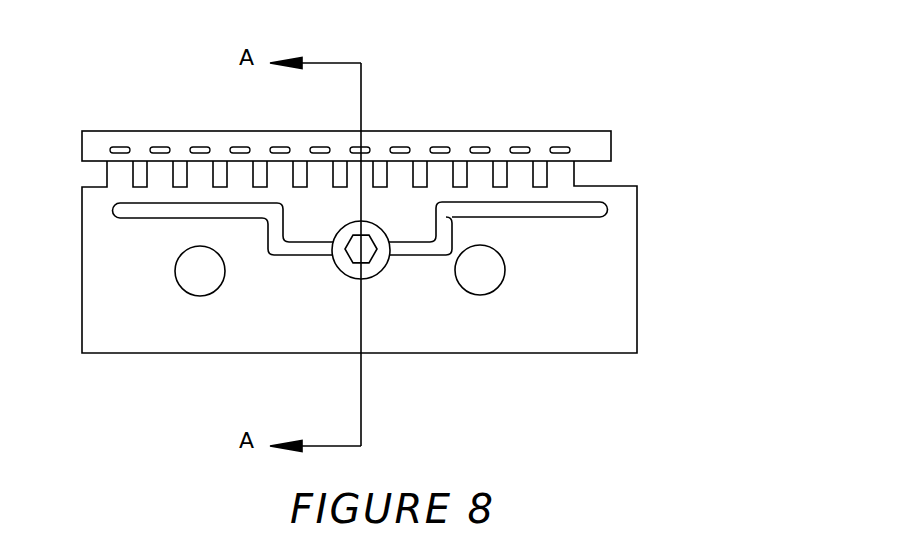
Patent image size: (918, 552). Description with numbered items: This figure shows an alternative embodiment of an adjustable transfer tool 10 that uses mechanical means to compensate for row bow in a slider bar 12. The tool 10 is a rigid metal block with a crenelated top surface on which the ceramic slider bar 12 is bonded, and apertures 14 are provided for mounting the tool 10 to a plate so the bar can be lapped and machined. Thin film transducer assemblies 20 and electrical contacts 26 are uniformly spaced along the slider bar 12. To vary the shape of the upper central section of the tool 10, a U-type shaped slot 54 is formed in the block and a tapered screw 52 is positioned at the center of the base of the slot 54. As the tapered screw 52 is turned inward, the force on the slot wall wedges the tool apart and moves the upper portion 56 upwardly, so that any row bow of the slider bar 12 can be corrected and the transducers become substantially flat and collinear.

The transfer tool 10 is at (425, 257).
The slider bar 12 is at (409, 116).
The apertures 14 is at (423, 320).
The thin film transducer assemblies 20 is at (359, 78).
The electrical contacts 26 is at (78, 80).
The tapered screw 52 is at (381, 270).
The U-type shaped slot 54 is at (607, 210).
The upper portion 56 is at (355, 123).